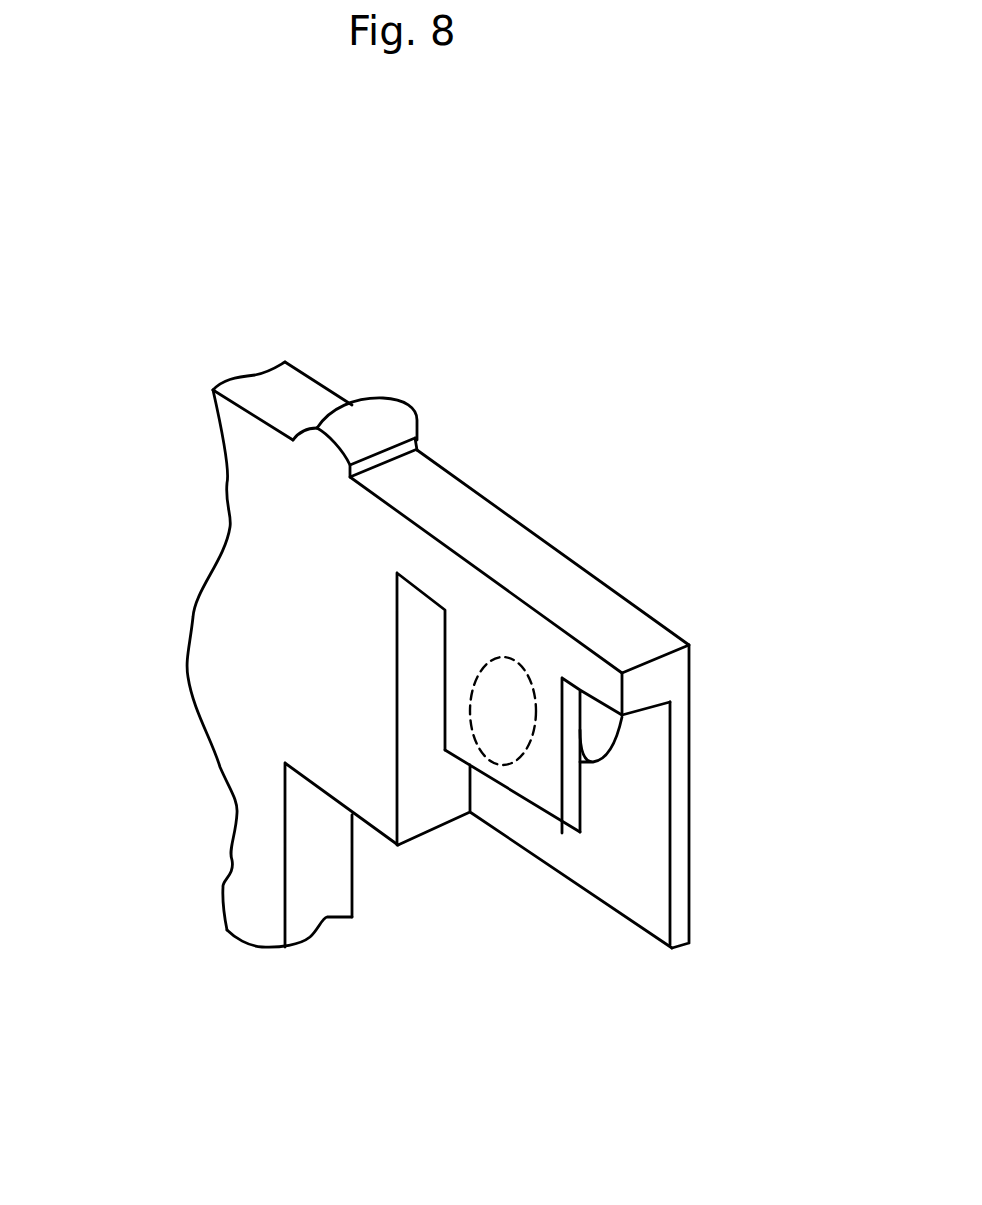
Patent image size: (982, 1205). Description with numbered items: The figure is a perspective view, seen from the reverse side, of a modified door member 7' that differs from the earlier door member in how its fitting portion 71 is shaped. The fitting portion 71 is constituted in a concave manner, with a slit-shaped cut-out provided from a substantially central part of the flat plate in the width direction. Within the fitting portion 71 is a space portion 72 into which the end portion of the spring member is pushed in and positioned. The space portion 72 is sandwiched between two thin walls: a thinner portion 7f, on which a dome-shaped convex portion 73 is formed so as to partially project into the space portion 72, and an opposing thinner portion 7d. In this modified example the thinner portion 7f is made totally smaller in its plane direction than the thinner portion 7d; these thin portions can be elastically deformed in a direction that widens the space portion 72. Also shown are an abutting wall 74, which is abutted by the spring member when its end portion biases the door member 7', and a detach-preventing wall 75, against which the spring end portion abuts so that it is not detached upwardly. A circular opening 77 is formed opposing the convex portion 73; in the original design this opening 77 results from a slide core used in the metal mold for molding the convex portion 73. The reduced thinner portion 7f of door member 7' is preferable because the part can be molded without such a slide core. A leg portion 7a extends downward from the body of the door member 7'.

The door member 7' is at (213, 654).
The leg portion 7a is at (318, 870).
The thinner portion 7d is at (683, 845).
The thinner portion 7f is at (540, 792).
The fitting portion 71 is at (572, 527).
The space portion 72 is at (597, 792).
The convex portion 73 is at (497, 743).
The abutting wall 74 is at (420, 702).
The detach-preventing wall 75 is at (650, 710).
The circular opening 77 is at (600, 730).